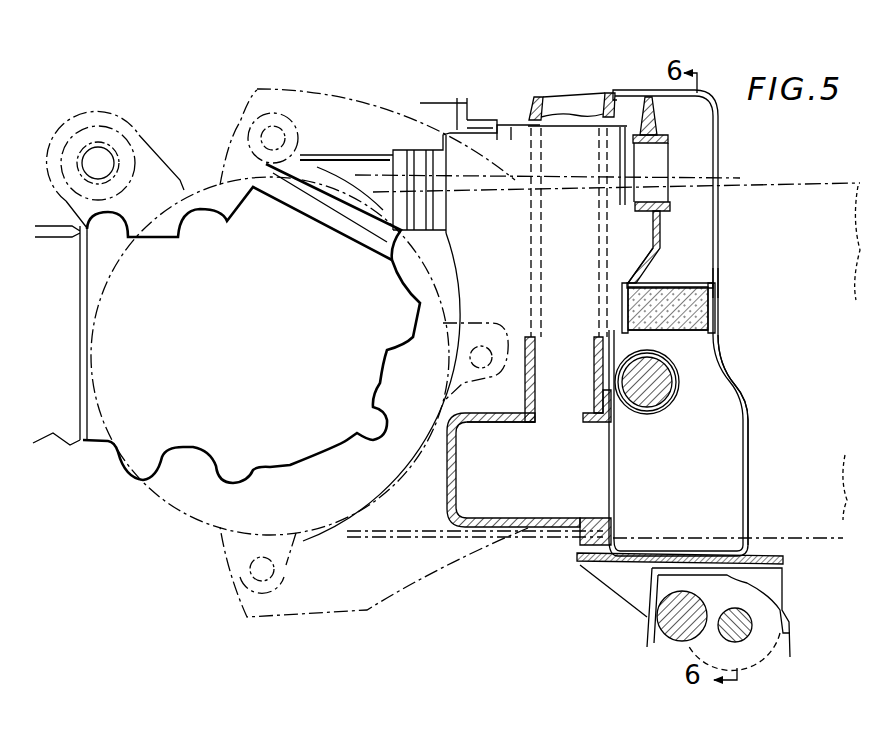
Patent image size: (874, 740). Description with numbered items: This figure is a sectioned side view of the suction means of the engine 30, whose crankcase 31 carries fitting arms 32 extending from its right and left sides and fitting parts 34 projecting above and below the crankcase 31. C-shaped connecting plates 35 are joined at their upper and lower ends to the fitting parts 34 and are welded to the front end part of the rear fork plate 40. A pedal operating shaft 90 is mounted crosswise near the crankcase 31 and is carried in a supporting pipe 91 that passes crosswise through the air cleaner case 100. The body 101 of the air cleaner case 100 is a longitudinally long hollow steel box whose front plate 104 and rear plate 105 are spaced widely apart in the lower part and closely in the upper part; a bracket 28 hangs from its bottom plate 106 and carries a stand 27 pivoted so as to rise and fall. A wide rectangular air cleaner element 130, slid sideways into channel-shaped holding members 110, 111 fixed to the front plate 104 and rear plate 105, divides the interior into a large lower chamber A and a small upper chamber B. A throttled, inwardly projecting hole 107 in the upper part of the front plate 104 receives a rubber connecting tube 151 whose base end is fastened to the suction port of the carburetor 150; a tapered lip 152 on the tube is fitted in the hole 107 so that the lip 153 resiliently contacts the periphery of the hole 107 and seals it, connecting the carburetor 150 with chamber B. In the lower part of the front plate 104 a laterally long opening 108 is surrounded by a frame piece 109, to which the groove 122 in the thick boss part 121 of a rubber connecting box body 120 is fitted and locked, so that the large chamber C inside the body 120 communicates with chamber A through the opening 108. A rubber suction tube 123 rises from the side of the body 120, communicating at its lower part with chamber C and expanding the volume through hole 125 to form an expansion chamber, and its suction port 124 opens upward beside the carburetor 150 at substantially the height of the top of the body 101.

The stand 27 is at (790, 647).
The bracket 28 is at (783, 560).
The engine 30 is at (65, 427).
The crankcase 31 is at (203, 433).
The fitting arms 32 is at (152, 132).
The fitting parts 34 is at (303, 137).
The connecting plates 35 is at (400, 605).
The rear fork plate 40 is at (767, 180).
The pedal operating shaft 90 is at (670, 409).
The supporting pipe 91 is at (653, 415).
The air cleaner case 100 is at (720, 258).
The body 101 is at (737, 390).
The front plate 104 is at (603, 353).
The rear plate 105 is at (748, 423).
The bottom plate 106 is at (630, 555).
The hole 107 is at (652, 190).
The opening 108 is at (615, 507).
The frame piece 109 is at (597, 565).
The holding member 110 is at (646, 278).
The holding member 111 is at (710, 282).
The connecting box body 120 is at (478, 524).
The boss part 121 is at (583, 532).
The groove 122 is at (600, 421).
The suction tube 123 is at (460, 368).
The suction port 124 is at (558, 107).
The hole 125 is at (540, 423).
The air cleaner element 130 is at (712, 313).
The carburetor 150 is at (511, 142).
The connecting tube 151 is at (635, 130).
The lip 152 is at (672, 205).
The sealing lip 153 is at (637, 223).
The lower chamber A is at (718, 477).
The upper chamber B is at (694, 243).
The chamber C is at (469, 493).